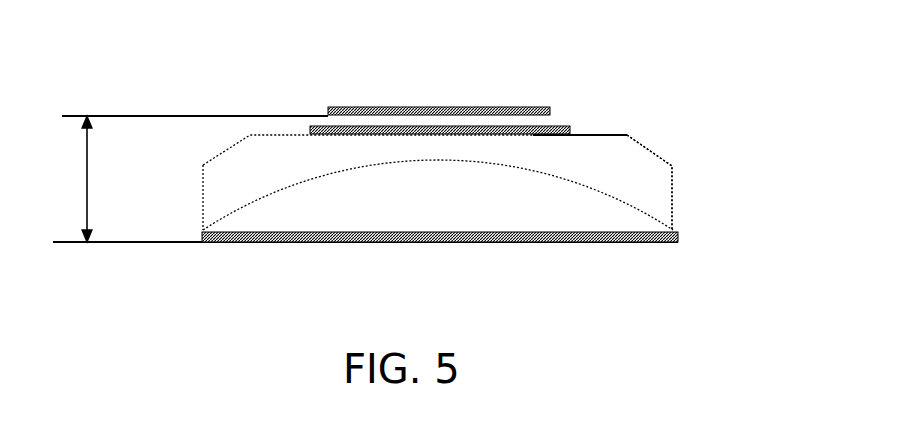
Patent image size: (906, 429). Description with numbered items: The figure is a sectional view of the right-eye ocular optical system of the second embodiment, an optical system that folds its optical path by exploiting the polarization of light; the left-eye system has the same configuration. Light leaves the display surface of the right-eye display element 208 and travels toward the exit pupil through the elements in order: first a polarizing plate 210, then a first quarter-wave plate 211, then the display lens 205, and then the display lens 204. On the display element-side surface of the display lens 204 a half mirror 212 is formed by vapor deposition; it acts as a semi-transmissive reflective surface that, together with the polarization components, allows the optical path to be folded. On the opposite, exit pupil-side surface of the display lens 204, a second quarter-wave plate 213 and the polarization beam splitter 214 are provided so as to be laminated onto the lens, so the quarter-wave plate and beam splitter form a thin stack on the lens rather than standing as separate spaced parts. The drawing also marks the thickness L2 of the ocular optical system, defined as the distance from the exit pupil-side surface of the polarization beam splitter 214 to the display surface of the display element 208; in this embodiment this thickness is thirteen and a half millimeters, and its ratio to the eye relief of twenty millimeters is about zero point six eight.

The display lens 204 is at (623, 223).
The display lens 205 is at (665, 190).
The right-eye display element 208 is at (413, 108).
The polarizing plate 210 is at (557, 127).
The first λ/4 plate 211 is at (577, 131).
The half mirror 212 is at (247, 207).
The second λ/4 plate 213 is at (362, 238).
The polarization beam splitter (PBS) 214 is at (257, 245).
The thickness of the ocular optical system L2 is at (190, 179).